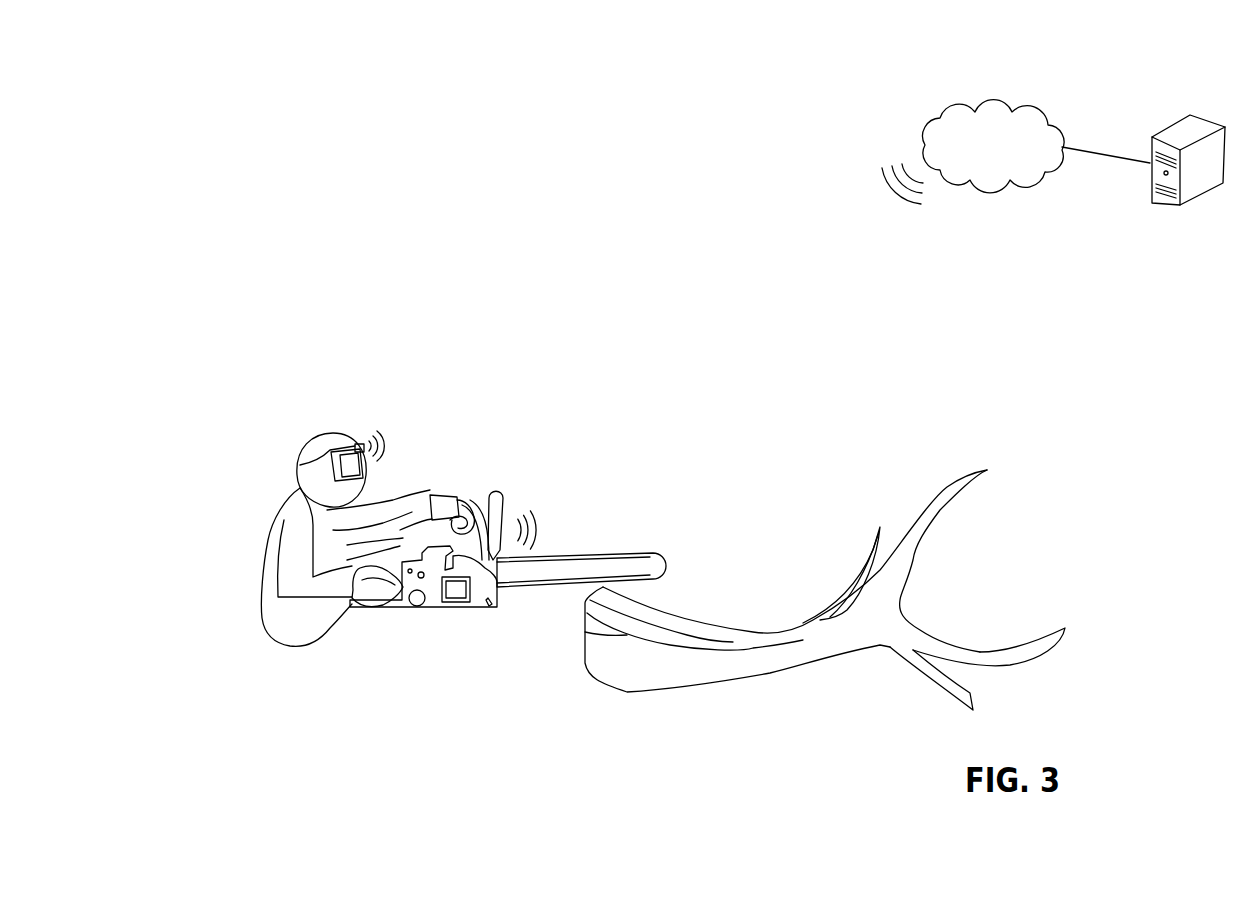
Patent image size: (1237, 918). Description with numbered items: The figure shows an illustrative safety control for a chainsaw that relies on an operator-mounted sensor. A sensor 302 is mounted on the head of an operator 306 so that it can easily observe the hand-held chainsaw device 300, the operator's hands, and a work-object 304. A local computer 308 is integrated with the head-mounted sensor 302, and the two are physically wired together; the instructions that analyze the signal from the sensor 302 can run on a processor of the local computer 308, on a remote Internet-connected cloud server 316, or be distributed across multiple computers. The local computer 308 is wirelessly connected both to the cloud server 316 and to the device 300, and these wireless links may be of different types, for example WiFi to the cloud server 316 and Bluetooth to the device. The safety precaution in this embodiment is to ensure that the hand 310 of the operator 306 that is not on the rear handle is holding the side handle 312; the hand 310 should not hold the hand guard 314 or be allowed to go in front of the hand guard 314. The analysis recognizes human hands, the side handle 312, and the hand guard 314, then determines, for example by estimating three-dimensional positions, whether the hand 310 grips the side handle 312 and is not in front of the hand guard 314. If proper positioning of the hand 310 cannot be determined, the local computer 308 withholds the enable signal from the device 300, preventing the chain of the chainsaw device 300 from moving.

The hand-held chainsaw device 300 is at (478, 606).
The sensor 302 is at (360, 450).
The work-object 304 is at (1027, 598).
The operator 306 is at (270, 548).
The local computer 308 is at (314, 446).
The hand 310 is at (446, 508).
The side handle 312 is at (473, 508).
The hand guard 314 is at (647, 447).
The cloud server 316 is at (1150, 148).